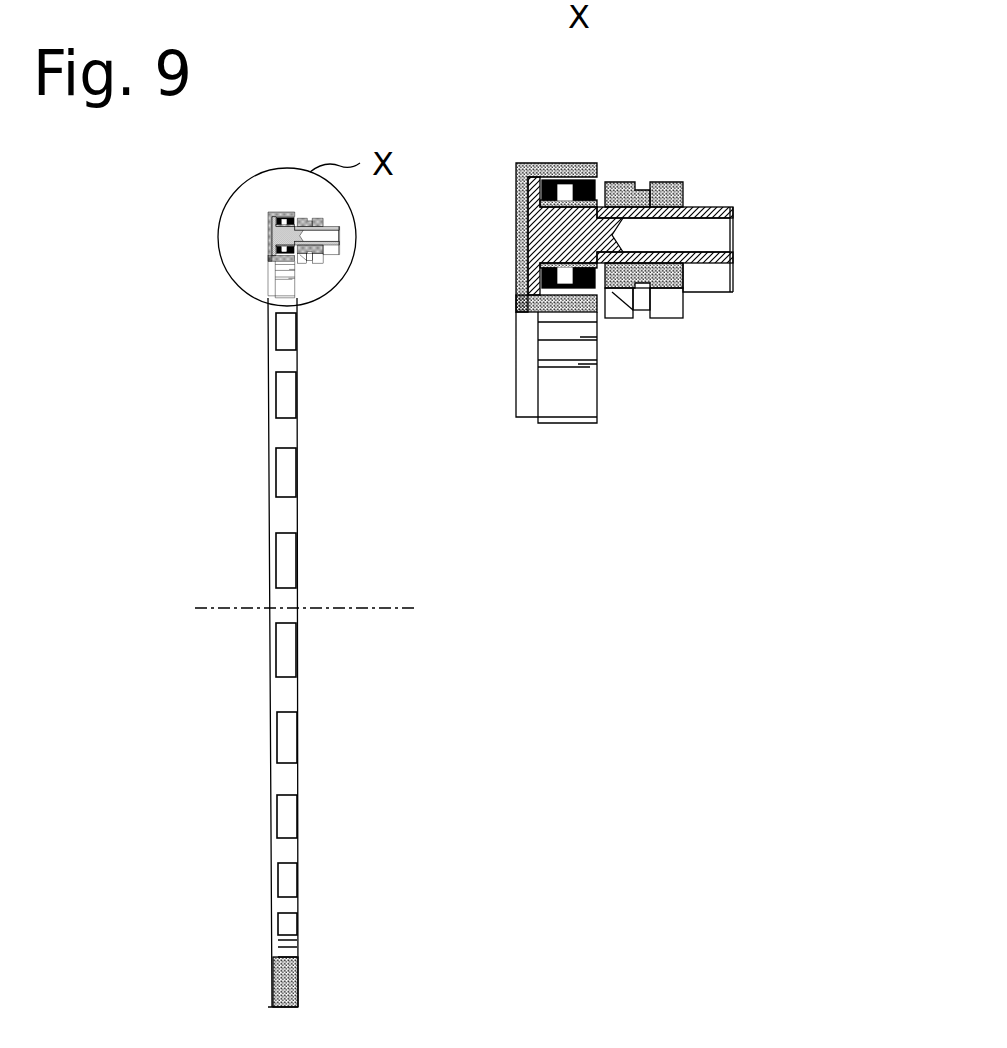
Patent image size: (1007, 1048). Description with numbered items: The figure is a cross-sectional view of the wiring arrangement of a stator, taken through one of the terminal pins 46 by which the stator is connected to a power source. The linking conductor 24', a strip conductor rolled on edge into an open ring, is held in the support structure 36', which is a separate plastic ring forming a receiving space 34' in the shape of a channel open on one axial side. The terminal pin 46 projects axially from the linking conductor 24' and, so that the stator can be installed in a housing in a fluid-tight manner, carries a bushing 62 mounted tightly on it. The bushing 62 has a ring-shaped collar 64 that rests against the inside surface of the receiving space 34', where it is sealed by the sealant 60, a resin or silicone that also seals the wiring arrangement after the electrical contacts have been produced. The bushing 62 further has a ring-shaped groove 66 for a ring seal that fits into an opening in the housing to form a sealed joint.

The linking conductor 24' is at (524, 236).
The receiving space 34' is at (511, 335).
The support structure 36' is at (556, 197).
The terminal pin 46 is at (732, 207).
The sealant 60 is at (605, 177).
The bushing 62 is at (670, 174).
The ring-shaped collar 64 is at (612, 292).
The ring-shaped groove 66 is at (642, 182).